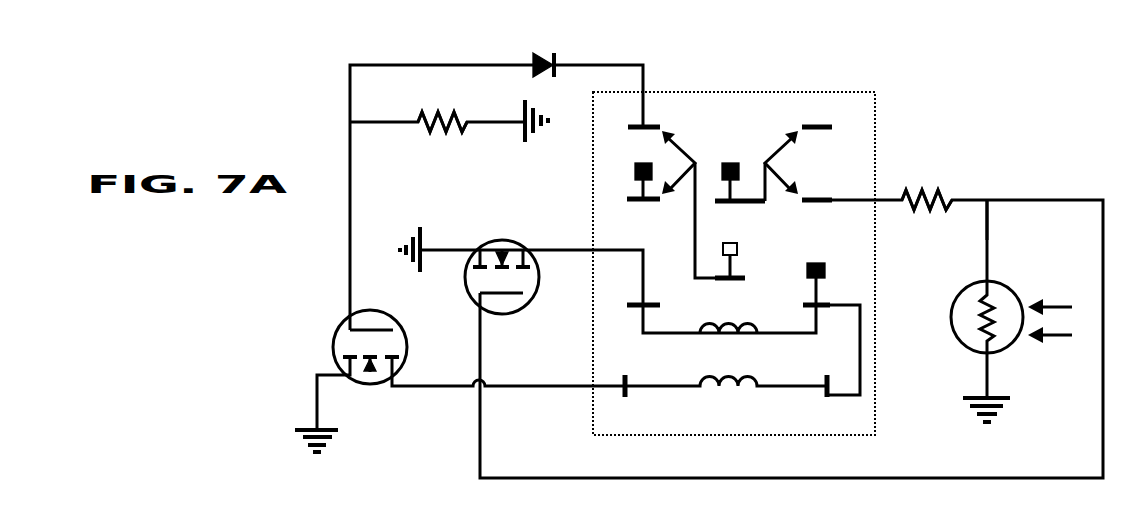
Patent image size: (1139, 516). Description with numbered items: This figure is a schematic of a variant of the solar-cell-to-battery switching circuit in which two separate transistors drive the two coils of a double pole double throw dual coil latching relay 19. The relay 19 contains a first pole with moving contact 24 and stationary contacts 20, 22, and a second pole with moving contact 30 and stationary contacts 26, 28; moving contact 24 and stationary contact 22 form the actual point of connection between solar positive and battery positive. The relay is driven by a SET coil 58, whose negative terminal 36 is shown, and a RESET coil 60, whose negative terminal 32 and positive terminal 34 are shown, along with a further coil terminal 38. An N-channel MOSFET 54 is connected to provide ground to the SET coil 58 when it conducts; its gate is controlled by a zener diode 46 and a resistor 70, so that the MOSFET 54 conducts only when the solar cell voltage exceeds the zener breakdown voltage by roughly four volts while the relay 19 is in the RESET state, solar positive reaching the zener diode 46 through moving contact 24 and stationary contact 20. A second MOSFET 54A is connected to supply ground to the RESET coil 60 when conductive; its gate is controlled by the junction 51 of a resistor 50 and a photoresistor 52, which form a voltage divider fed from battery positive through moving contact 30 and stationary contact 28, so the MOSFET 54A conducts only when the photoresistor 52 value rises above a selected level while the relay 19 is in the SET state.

The double pole double throw dual coil latching relay 19 is at (730, 85).
The stationary contact 20 is at (630, 132).
The stationary contact 22 is at (630, 210).
The moving contact 24 is at (747, 280).
The stationary contact 26 is at (835, 132).
The stationary contact 28 is at (833, 205).
The moving contact 30 is at (745, 205).
The RESET coil negative terminal 32 is at (655, 328).
The RESET coil positive terminal 34 is at (800, 328).
The SET coil negative terminal 36 is at (628, 378).
The coil terminal 38 is at (822, 378).
The zener diode 46 is at (548, 58).
The resistor 50 is at (932, 208).
The junction 51 is at (987, 197).
The photoresistor 52 is at (952, 328).
The N-channel MOSFET 54 is at (372, 385).
The second MOSFET 54A is at (502, 240).
The SET coil 58 is at (728, 389).
The RESET coil 60 is at (742, 336).
The resistor 70 is at (440, 130).